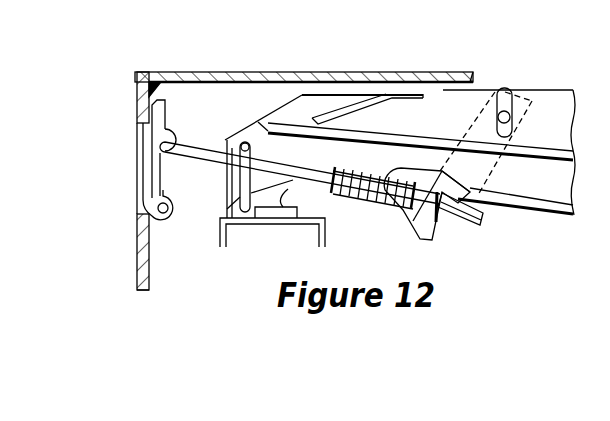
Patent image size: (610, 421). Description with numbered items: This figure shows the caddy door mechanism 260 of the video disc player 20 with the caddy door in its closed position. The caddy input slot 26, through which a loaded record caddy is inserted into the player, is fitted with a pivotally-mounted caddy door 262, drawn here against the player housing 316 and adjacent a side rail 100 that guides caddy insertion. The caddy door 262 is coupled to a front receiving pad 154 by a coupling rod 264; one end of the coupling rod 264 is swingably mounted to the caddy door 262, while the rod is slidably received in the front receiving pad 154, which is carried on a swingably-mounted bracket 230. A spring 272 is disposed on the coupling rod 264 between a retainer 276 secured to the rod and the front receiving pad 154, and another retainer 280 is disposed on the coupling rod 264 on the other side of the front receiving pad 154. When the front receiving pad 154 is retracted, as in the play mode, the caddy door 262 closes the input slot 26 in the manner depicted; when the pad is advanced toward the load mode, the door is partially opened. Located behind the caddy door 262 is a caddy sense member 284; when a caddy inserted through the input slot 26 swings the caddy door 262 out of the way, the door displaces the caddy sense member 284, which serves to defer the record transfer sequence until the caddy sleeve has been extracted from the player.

The video disc player 20 is at (208, 297).
The caddy input slot 26 is at (126, 159).
The side rail 100 is at (357, 157).
The front receiving pad 154 is at (458, 187).
The swingably-mounted bracket 230 is at (503, 87).
The caddy door mechanism 260 is at (365, 58).
The caddy door 262 is at (141, 185).
The coupling rod 264 is at (203, 152).
The spring 272 is at (369, 200).
The retainer 276 is at (333, 191).
The retainer 280 is at (438, 214).
The caddy sense member 284 is at (243, 179).
The player housing 316 is at (294, 106).